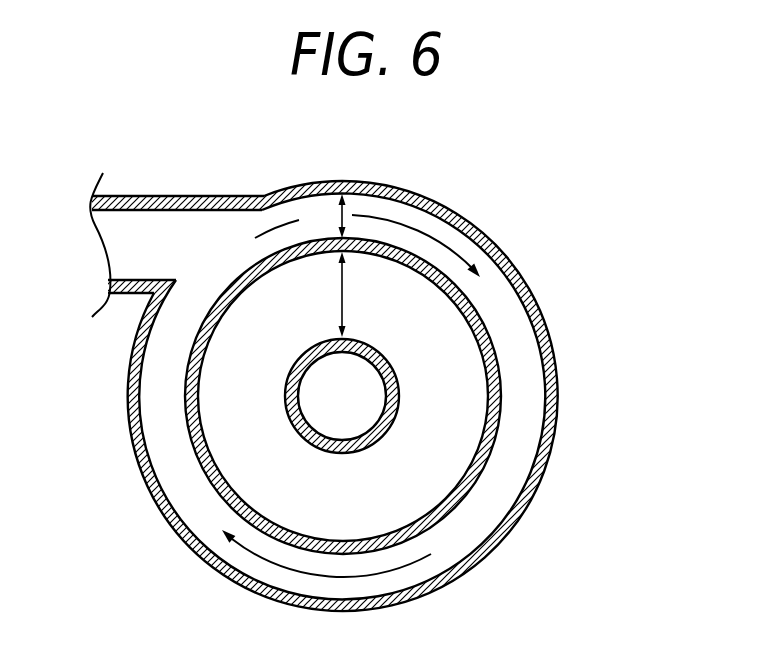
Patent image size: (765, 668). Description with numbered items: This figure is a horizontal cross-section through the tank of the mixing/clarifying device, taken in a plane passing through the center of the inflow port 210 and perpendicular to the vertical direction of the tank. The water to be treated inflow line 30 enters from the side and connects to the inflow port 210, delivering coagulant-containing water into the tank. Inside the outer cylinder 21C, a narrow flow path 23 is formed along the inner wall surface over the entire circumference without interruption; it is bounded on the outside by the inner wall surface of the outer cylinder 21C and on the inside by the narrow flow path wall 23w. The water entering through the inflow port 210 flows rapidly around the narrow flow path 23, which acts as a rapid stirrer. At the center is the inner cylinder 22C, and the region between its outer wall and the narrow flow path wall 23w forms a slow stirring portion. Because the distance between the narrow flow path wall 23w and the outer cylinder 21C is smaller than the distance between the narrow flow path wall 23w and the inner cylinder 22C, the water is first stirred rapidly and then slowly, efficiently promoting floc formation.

The water to be treated inflow line 30 is at (140, 196).
The inflow port 210 is at (212, 237).
The outer cylinder 21C is at (478, 222).
The narrow flow path wall 23w is at (492, 333).
The narrow flow path 23 is at (522, 402).
The inner cylinder 22C is at (385, 432).